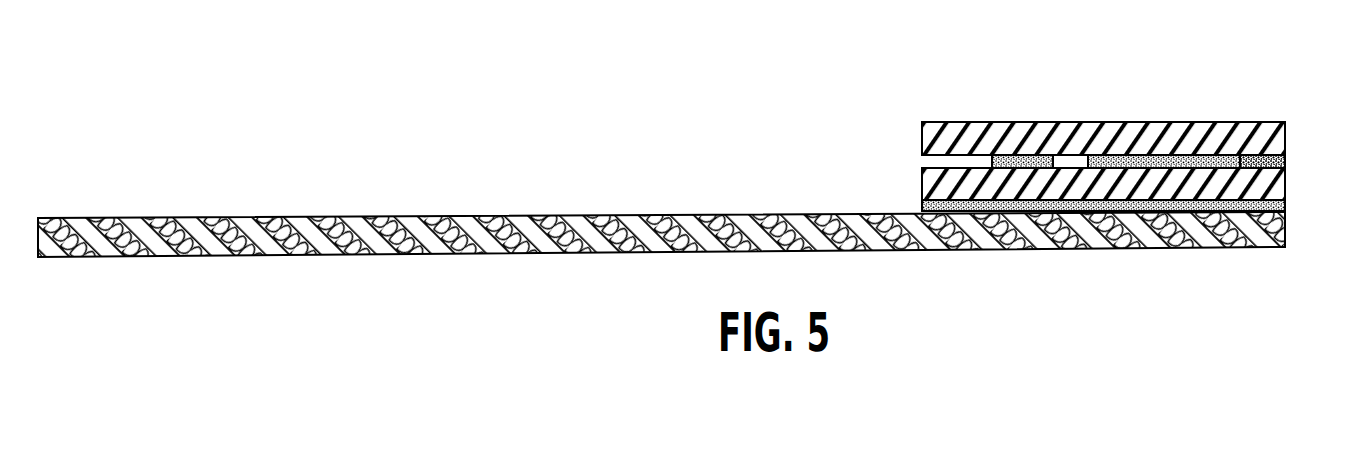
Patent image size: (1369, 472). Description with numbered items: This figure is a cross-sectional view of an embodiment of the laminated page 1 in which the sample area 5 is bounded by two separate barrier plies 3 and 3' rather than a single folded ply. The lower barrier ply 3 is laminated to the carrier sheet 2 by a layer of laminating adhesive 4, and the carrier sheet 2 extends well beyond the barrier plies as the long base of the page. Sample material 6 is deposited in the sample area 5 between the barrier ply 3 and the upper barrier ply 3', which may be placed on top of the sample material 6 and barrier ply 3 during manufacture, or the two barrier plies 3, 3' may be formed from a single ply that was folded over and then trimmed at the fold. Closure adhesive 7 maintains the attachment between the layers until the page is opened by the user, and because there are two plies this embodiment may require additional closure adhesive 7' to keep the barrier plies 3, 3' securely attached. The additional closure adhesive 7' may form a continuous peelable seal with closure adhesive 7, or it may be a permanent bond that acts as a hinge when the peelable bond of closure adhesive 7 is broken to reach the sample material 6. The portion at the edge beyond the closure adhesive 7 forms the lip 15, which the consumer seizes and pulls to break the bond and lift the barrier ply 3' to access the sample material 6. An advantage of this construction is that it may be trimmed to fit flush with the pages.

The laminated page 1 is at (104, 182).
The carrier sheet 2 is at (321, 217).
The barrier ply 3 is at (1138, 180).
The barrier ply 3' is at (1142, 136).
The laminating adhesive 4 is at (1287, 203).
The sample area 5 is at (1118, 153).
The sample material 6 is at (1185, 160).
The closure adhesive 7 is at (1039, 233).
The additional closure adhesive 7' is at (1237, 233).
The lip 15 is at (1003, 112).